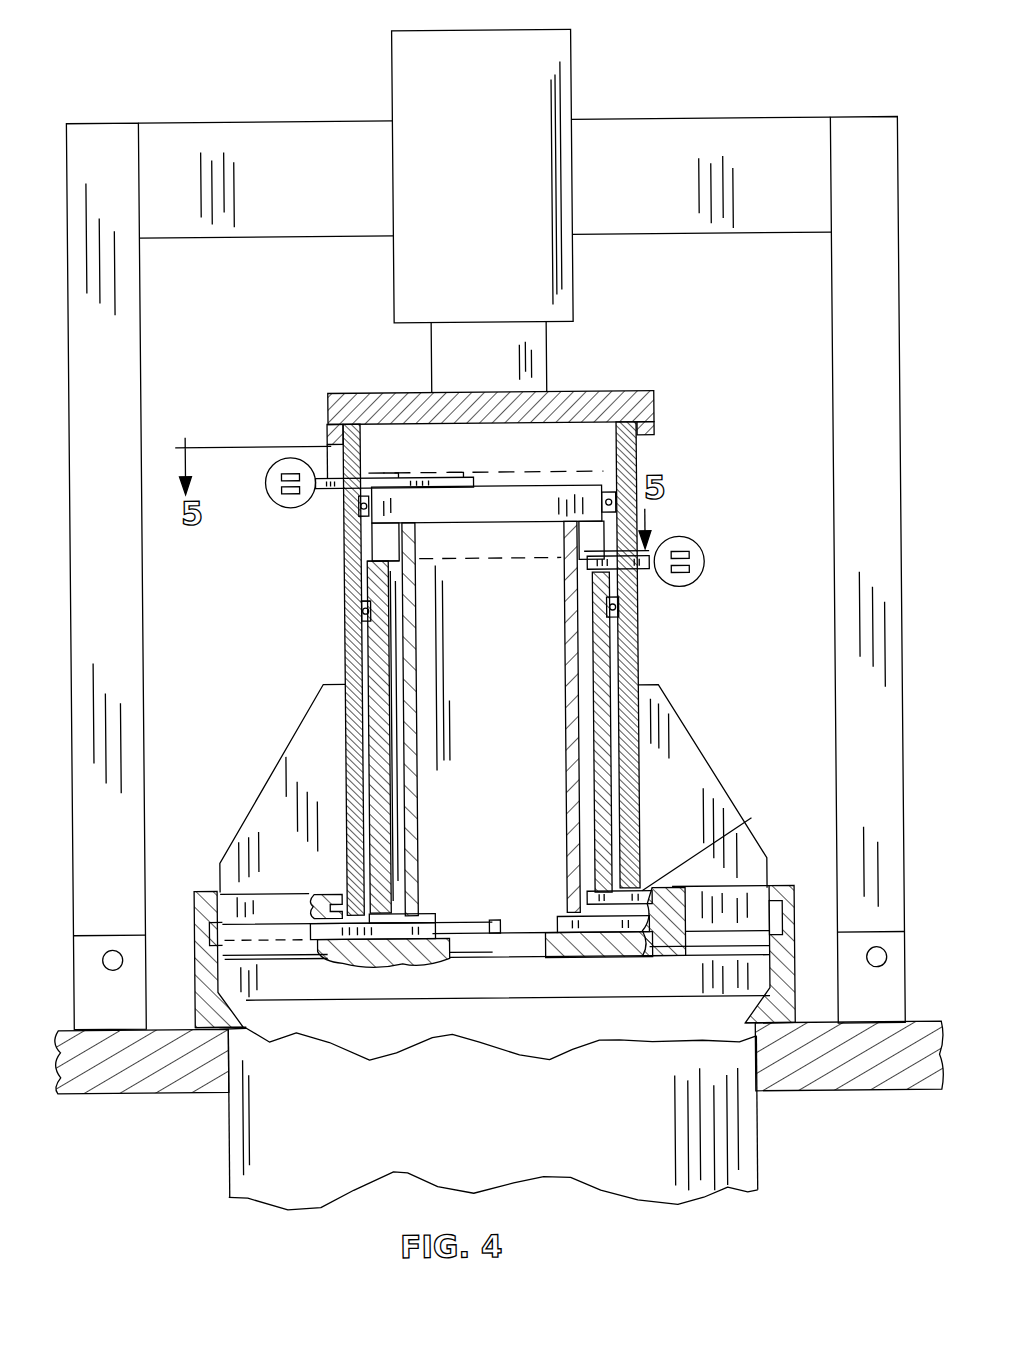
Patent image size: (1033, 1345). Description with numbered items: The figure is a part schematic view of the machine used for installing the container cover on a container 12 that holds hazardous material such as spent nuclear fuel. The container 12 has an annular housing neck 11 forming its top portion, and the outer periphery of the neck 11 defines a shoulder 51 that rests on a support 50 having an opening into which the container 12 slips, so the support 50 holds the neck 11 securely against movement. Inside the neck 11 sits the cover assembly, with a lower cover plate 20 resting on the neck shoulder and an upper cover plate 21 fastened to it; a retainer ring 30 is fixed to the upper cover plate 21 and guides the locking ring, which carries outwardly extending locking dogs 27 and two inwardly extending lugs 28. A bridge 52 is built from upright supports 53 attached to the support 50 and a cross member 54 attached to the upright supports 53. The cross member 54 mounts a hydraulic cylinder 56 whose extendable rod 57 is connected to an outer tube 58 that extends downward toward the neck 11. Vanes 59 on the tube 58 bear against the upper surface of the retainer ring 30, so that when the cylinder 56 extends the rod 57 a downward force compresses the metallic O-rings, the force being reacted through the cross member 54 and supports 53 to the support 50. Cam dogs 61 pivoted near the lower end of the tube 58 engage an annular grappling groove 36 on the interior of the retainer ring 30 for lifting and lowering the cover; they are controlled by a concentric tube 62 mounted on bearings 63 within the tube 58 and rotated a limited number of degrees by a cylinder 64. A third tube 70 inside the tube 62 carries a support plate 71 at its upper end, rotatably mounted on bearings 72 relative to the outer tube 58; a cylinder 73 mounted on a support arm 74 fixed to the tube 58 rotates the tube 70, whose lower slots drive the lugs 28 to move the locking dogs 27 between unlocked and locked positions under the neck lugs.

The annular housing neck 11 is at (790, 955).
The container 12 is at (241, 1152).
The lower cover plate 20 is at (606, 975).
The upper cover plate 21 is at (748, 940).
The locking dogs 27 is at (213, 888).
The lugs 28 is at (433, 928).
The retainer ring 30 is at (748, 895).
The grappling groove 36 is at (345, 895).
The support 50 is at (126, 1082).
The shoulder 51 is at (208, 1030).
The bridge 52 is at (506, 544).
The upright supports 53 is at (128, 668).
The cross member 54 is at (735, 140).
The cylinder 56 is at (433, 88).
The rod 57 is at (547, 345).
The tube 58 is at (640, 665).
The vanes 59 is at (303, 740).
The cam dogs 61 is at (716, 846).
The tube 62 is at (608, 738).
The bearings 63 is at (360, 612).
The cylinder 64 is at (700, 550).
The third tube 70 is at (565, 598).
The support plate 71 is at (500, 485).
The bearings 72 is at (613, 497).
The cylinder 73 is at (275, 472).
The support arm 74 is at (385, 478).